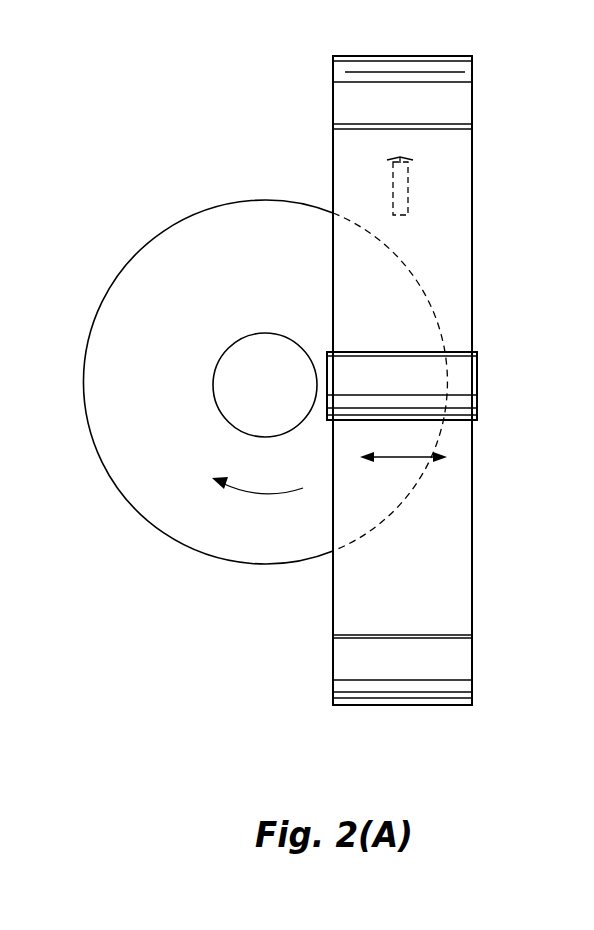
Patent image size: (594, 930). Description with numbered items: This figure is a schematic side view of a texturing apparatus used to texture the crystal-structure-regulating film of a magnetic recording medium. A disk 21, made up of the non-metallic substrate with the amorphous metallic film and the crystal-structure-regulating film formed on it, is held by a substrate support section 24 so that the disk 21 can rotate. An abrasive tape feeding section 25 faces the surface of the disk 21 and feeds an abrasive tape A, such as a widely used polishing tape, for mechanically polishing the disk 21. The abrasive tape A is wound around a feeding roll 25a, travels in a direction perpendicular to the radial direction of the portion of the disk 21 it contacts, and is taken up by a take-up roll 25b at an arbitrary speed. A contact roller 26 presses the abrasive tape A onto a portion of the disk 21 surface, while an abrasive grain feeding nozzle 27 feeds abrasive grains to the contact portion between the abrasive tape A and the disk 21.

The disk 21 is at (212, 538).
The substrate support section 24 is at (258, 350).
The abrasive tape feeding section 25 is at (488, 162).
The feeding roll 25a is at (348, 103).
The take-up roll 25b is at (348, 667).
The contact roller 26 is at (467, 385).
The abrasive grain feeding nozzle 27 is at (408, 190).
The abrasive tape A is at (457, 300).